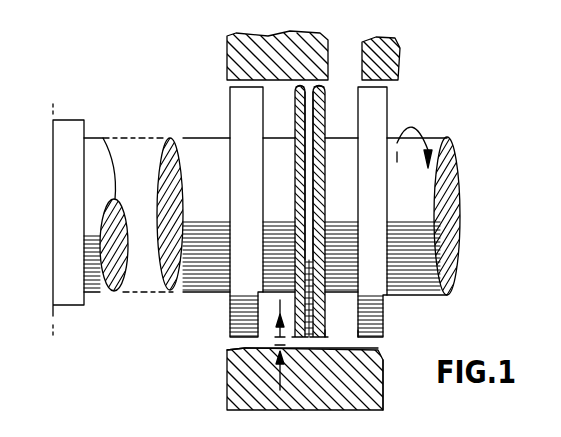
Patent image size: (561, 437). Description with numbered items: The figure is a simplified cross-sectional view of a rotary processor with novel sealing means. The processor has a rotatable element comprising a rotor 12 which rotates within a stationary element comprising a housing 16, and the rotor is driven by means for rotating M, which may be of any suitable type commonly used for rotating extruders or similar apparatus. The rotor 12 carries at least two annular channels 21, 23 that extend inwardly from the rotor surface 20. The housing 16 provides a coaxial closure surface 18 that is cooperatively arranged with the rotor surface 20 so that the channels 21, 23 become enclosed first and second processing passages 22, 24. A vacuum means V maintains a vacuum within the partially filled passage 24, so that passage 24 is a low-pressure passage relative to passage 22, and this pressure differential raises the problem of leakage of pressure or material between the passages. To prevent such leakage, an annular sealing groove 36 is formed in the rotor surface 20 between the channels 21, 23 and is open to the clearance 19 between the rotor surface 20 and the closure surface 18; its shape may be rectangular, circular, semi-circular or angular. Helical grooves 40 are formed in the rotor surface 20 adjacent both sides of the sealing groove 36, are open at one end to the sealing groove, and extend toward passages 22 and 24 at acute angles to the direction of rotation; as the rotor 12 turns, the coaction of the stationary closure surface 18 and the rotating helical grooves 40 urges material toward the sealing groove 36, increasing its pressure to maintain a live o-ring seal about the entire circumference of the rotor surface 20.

The rotor 12 is at (380, 214).
The housing 16 is at (227, 55).
The closure surface 18 is at (233, 348).
The clearance 19 is at (312, 335).
The rotor surface 20 is at (342, 328).
The annular channel 21 is at (276, 138).
The first processing passage 22 is at (268, 315).
The annular channel 23 is at (340, 138).
The second processing passage 24 is at (381, 367).
The annular sealing groove 36 is at (312, 88).
The helical grooves 40 is at (297, 104).
The means for rotating rotor M is at (84, 128).
The vacuum means V is at (344, 46).